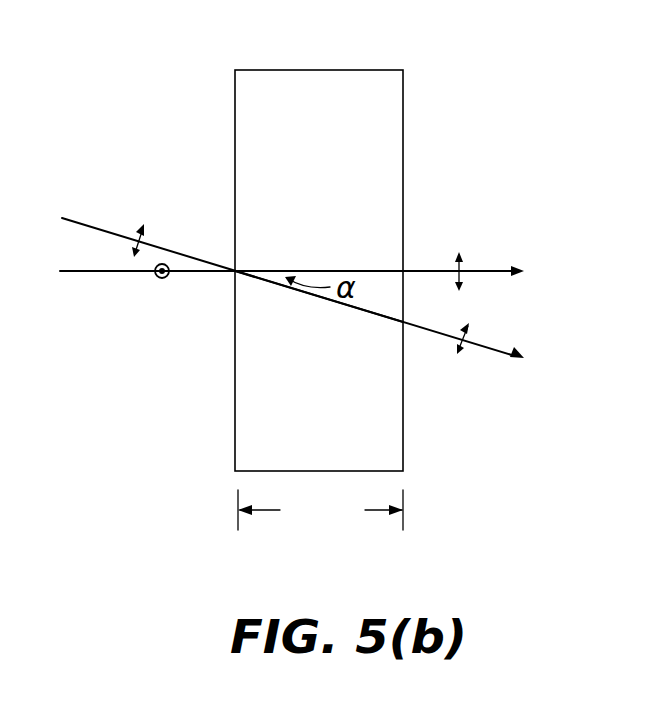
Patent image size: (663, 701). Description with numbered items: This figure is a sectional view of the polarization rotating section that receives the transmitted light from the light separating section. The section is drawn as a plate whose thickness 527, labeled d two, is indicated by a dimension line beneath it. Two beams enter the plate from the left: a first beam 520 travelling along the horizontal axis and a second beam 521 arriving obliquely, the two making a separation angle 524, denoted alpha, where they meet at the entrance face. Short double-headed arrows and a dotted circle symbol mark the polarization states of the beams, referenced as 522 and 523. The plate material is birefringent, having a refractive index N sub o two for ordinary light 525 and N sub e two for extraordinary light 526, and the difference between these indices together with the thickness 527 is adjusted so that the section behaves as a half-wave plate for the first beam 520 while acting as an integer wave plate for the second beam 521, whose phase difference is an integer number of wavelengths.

The first beam 520 is at (103, 274).
The second beam 521 is at (98, 228).
The polarization direction (perpendicular to drawing plane) 522 is at (167, 279).
The polarization direction of inclined beam 523 is at (147, 231).
The separation angle 524 is at (380, 299).
The ordinary light 525 is at (319, 236).
The extraordinary light 526 is at (362, 112).
The thickness 527 is at (320, 520).